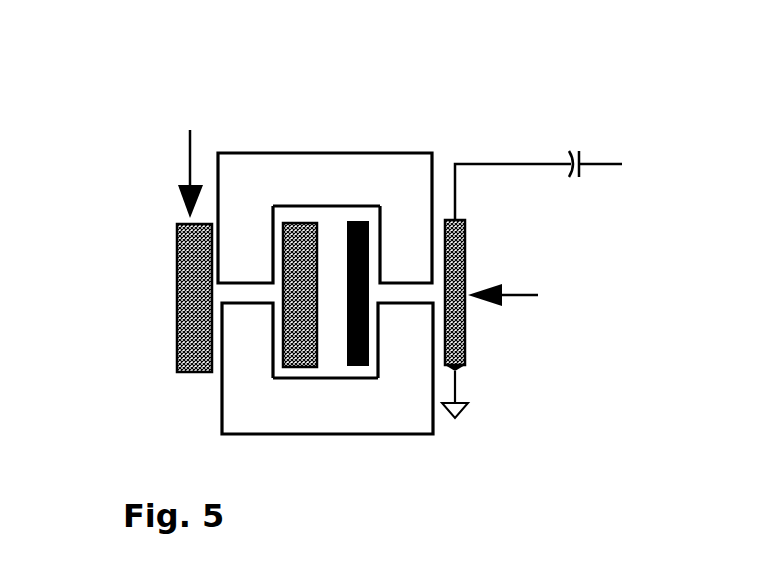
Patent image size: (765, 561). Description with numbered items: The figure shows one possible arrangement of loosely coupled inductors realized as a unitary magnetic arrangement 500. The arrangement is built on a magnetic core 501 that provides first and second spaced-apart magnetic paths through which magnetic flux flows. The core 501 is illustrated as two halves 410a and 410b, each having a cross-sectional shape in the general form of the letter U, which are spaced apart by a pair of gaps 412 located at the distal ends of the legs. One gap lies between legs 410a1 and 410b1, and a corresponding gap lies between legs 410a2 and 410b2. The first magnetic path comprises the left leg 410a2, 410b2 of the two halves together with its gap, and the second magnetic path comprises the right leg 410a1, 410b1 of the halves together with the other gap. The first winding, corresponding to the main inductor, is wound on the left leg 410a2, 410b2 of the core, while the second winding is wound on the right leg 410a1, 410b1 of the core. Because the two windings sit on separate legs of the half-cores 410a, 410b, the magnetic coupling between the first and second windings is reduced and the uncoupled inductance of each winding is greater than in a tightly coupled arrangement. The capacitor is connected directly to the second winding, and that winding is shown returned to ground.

The unitary magnetic arrangement 500 is at (347, 62).
The magnetic core 501 is at (115, 218).
The half-core 410a is at (388, 152).
The leg 410a1 is at (413, 253).
The leg 410a2 is at (248, 247).
The half-core 410b is at (325, 435).
The leg 410b1 is at (413, 340).
The leg 410b2 is at (245, 340).
The gaps 412 is at (323, 323).